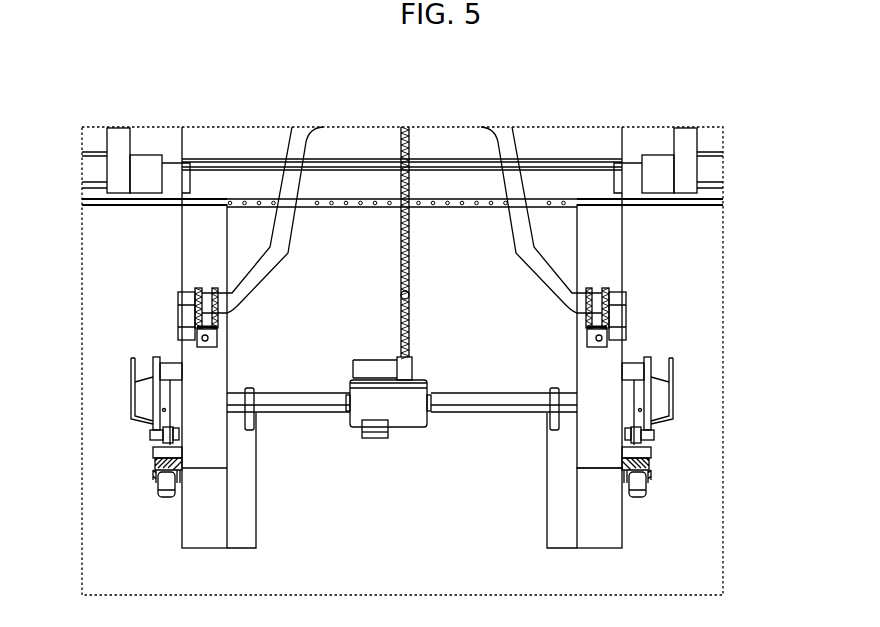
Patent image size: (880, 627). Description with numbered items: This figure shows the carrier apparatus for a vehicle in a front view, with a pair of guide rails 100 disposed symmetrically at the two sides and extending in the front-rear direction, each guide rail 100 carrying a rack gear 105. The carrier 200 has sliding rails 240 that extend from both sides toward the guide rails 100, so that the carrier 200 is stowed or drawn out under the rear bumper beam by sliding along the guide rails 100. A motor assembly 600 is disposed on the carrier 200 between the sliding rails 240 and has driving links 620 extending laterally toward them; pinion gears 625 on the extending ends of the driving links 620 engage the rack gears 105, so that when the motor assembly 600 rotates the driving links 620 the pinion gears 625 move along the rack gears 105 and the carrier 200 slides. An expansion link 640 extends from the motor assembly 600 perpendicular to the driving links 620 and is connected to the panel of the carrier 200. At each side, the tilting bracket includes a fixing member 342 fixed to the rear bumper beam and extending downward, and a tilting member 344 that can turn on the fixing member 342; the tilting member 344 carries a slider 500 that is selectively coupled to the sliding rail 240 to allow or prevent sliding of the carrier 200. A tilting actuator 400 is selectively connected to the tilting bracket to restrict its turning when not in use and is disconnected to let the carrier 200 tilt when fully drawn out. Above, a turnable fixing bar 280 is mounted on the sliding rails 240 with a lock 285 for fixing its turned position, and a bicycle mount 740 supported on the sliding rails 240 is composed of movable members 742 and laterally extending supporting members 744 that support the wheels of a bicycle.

The guide rail 100 is at (612, 528).
The rack gear 105 is at (548, 522).
The carrier 200 is at (176, 252).
The sliding rail 240 is at (612, 255).
The fixing bar 280 is at (520, 192).
The lock 285 is at (178, 306).
The fixing member 342 is at (131, 385).
The tilting member 344 is at (153, 452).
The tilting actuator 400 is at (165, 500).
The slider 500 is at (163, 435).
The motor assembly 600 is at (402, 415).
The driving link 620 is at (503, 413).
The pinion gear 625 is at (560, 390).
The expansion link 640 is at (408, 218).
The bicycle mount 740 is at (470, 166).
The movable member 742 is at (690, 138).
The supporting member 744 is at (710, 170).